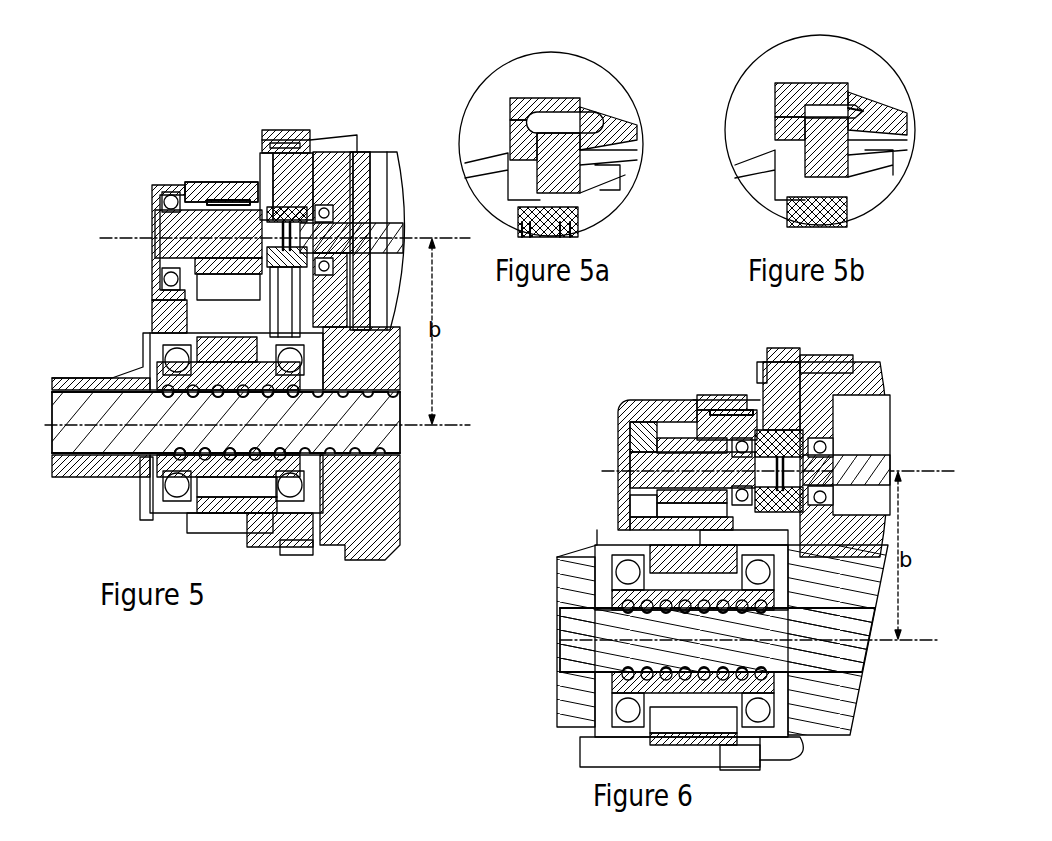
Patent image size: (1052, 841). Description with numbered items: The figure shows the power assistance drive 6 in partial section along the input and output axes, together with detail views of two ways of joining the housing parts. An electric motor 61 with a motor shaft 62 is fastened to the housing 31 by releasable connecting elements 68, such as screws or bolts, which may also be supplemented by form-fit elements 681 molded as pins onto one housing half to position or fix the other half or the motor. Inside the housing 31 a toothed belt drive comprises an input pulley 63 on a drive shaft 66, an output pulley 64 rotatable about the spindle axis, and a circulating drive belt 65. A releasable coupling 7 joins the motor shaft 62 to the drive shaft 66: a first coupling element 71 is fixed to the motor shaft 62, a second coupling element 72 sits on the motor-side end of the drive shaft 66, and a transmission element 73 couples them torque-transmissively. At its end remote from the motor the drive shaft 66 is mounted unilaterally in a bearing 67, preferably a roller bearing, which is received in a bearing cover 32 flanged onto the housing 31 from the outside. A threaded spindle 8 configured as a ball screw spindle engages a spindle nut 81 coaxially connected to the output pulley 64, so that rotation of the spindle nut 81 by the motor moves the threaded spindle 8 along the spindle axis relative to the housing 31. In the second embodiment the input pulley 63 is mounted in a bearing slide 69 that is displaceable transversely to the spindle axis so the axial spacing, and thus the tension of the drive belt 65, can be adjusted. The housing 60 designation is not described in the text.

In FIG. 5, the power assistance drive 6 is at (155, 135).
In FIG. 6, the power assistance drive 6 is at (595, 373).
In FIG. 5, the releasable coupling 7 is at (290, 205).
In FIG. 5A, the releasable coupling 7 is at (558, 163).
In FIG. 5B, the releasable coupling 7 is at (826, 147).
In FIG. 6, the releasable coupling 7 is at (763, 427).
In FIG. 5, the threaded spindle 8 is at (60, 470).
In FIG. 6, the threaded spindle 8 is at (587, 620).
In FIG. 5, the housing 31 is at (295, 130).
In FIG. 5A, the housing 31 is at (570, 127).
In FIG. 5B, the housing 31 is at (791, 93).
In FIG. 6, the housing 31 is at (627, 498).
In FIG. 5, the bearing cover 32 is at (174, 188).
In FIG. 5B, the bearing cover 32 is at (803, 0).
In FIG. 5, the housing 60 is at (210, 160).
In FIG. 5B, the housing 60 is at (713, 0).
In FIG. 6, the housing 60 is at (672, 400).
In FIG. 5, the electric motor 61 is at (373, 147).
In FIG. 5A, the electric motor 61 is at (630, 133).
In FIG. 5B, the electric motor 61 is at (882, 100).
In FIG. 6, the electric motor 61 is at (873, 410).
In FIG. 5, the motor shaft 62 is at (403, 233).
In FIG. 6, the motor shaft 62 is at (890, 462).
In FIG. 5, the input pulley 63 is at (220, 207).
In FIG. 6, the input pulley 63 is at (690, 443).
In FIG. 5, the output pulley 64 is at (200, 520).
In FIG. 6, the output pulley 64 is at (693, 742).
In FIG. 5, the drive belt 65 is at (238, 527).
In FIG. 6, the drive belt 65 is at (662, 447).
In FIG. 5, the drive shaft 66 is at (207, 233).
In FIG. 6, the drive shaft 66 is at (655, 465).
In FIG. 5, the bearing 67 is at (157, 187).
In FIG. 5, the releasable connecting elements 68 is at (293, 132).
In FIG. 5A, the releasable connecting elements 68 is at (590, 113).
In FIG. 5B, the releasable connecting elements 68 is at (811, 111).
In FIG. 6, the releasable connecting elements 68 is at (818, 370).
In FIG. 6, the bearing slide 69 is at (630, 437).
In FIG. 5, the first coupling element 71 is at (300, 213).
In FIG. 5A, the first coupling element 71 is at (583, 233).
In FIG. 6, the first coupling element 71 is at (777, 427).
In FIG. 5, the second coupling element 72 is at (270, 215).
In FIG. 5A, the second coupling element 72 is at (527, 216).
In FIG. 6, the second coupling element 72 is at (768, 447).
In FIG. 5, the transmission element 73 is at (272, 210).
In FIG. 5A, the transmission element 73 is at (590, 221).
In FIG. 5B, the transmission element 73 is at (817, 212).
In FIG. 6, the transmission element 73 is at (767, 427).
In FIG. 5, the spindle nut 81 is at (147, 500).
In FIG. 6, the spindle nut 81 is at (593, 580).
In FIG. 5B, the form-fit elements 681 is at (845, 108).